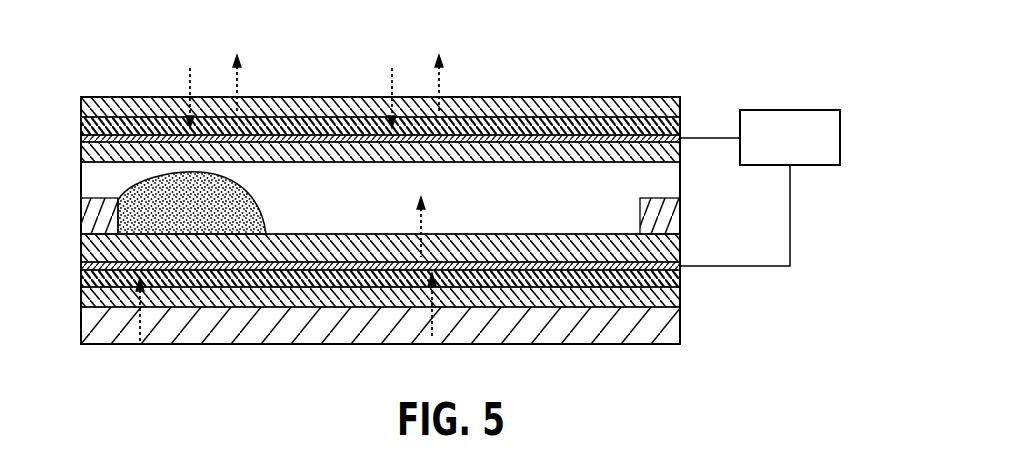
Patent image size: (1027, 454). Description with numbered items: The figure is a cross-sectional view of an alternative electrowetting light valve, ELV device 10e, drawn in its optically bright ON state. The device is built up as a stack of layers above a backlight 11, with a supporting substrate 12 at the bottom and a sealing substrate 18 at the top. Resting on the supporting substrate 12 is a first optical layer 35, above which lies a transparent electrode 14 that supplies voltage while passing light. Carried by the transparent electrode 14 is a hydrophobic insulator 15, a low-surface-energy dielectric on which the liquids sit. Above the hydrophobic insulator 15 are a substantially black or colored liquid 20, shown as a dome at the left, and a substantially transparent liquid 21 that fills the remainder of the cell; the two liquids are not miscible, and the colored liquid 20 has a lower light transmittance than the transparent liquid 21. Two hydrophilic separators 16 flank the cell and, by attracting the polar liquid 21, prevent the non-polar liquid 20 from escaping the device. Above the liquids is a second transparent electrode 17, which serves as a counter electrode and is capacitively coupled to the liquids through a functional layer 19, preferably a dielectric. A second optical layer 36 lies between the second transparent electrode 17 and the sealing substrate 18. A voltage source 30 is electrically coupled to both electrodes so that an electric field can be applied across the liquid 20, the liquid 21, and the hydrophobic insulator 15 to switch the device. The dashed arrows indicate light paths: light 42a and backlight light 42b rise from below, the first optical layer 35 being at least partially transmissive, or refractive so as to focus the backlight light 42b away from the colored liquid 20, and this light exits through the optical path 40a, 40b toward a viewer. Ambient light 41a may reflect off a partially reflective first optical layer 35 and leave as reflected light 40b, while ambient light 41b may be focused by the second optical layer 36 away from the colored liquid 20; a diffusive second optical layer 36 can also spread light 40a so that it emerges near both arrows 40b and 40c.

The ELV device 10e is at (660, 62).
The backlight 11 is at (672, 332).
The supporting substrate 12 is at (90, 302).
The transparent electrode 14 is at (80, 255).
The hydrophobic insulator 15 is at (343, 250).
The hydrophilic separator 16 is at (90, 221).
The second transparent electrode 17 is at (82, 126).
The sealing substrate 18 is at (88, 109).
The functional layer 19 is at (82, 153).
The substantially black or colored liquid 20 is at (133, 180).
The substantially transparent liquid 21 is at (673, 178).
The voltage source 30 is at (820, 110).
The first optical layer 35 is at (680, 283).
The second optical layer 36 is at (383, 128).
The optical path 40a is at (423, 221).
The optical path 40b is at (440, 90).
The emerging light arrow 40c is at (238, 90).
The ambient light 41a is at (391, 73).
The ambient light 41b is at (188, 73).
The transmitted light 42a is at (435, 312).
The backlight light 42b is at (142, 317).